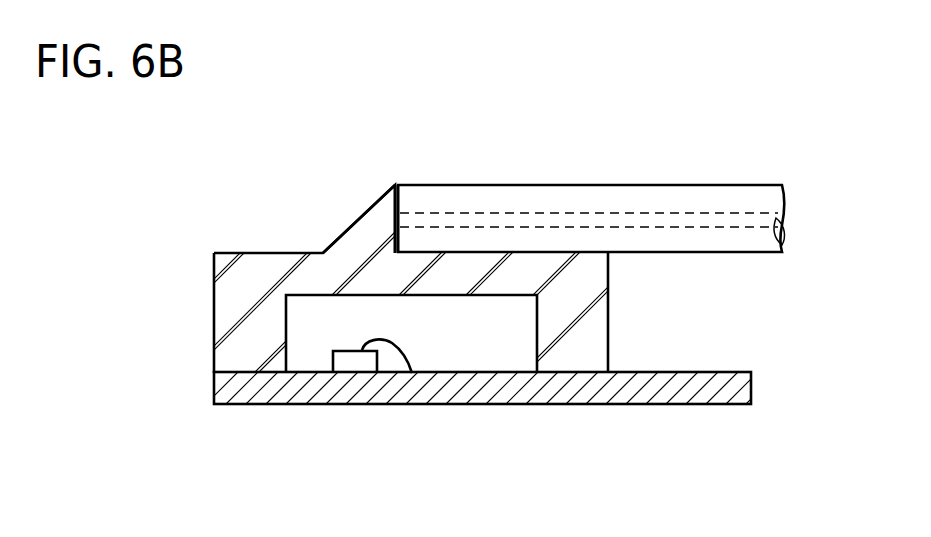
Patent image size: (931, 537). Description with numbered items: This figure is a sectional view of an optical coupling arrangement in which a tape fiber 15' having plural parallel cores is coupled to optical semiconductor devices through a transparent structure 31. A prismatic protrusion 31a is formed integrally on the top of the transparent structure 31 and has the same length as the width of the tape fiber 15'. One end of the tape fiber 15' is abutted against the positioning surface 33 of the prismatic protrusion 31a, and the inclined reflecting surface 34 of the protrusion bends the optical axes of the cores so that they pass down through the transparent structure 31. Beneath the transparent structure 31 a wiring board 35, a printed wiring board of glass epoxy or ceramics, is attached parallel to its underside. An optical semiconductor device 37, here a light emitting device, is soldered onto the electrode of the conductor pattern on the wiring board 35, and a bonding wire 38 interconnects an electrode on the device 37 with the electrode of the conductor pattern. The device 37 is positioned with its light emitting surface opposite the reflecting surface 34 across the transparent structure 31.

The transparent structure 31 is at (245, 272).
The prismatic protrusion 31a is at (369, 232).
The positioning surface 33 is at (398, 204).
The reflecting surface 34 is at (347, 225).
The tape fiber 15' is at (591, 184).
The wiring board 35 is at (655, 398).
The optical semiconductor device 37 is at (347, 367).
The bonding wire 38 is at (402, 355).